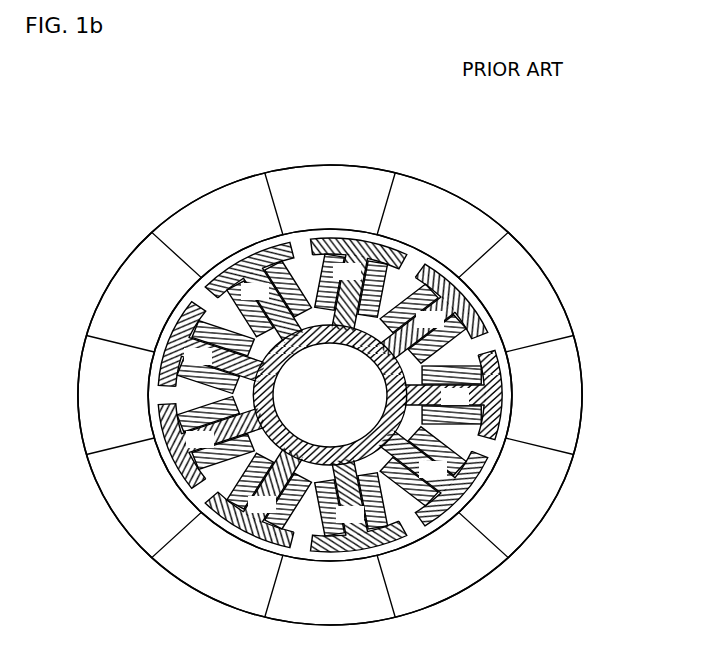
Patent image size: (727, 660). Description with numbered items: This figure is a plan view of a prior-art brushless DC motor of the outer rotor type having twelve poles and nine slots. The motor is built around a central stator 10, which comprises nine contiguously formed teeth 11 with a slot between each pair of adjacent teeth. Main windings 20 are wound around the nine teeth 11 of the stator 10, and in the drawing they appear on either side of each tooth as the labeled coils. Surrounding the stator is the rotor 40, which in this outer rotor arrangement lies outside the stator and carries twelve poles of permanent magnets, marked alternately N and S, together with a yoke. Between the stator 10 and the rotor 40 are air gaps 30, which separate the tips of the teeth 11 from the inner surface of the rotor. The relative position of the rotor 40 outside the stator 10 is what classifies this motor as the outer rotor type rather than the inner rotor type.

The stator 10 is at (349, 347).
The teeth 11 is at (440, 265).
The main windings 20 is at (483, 303).
The air gaps 30 is at (458, 273).
The rotor 40 is at (472, 292).